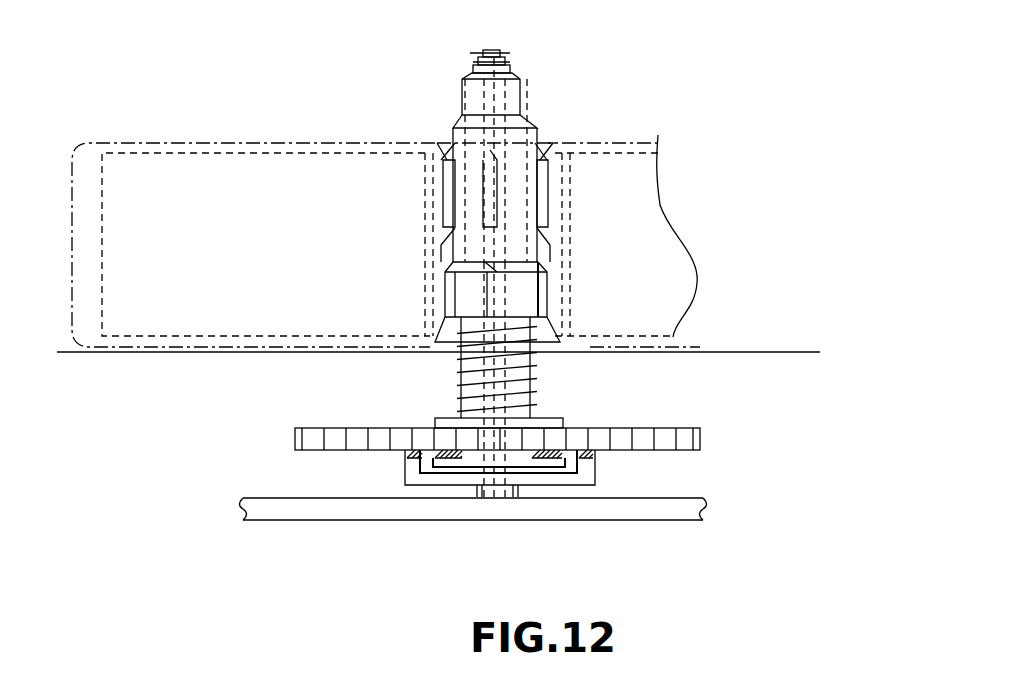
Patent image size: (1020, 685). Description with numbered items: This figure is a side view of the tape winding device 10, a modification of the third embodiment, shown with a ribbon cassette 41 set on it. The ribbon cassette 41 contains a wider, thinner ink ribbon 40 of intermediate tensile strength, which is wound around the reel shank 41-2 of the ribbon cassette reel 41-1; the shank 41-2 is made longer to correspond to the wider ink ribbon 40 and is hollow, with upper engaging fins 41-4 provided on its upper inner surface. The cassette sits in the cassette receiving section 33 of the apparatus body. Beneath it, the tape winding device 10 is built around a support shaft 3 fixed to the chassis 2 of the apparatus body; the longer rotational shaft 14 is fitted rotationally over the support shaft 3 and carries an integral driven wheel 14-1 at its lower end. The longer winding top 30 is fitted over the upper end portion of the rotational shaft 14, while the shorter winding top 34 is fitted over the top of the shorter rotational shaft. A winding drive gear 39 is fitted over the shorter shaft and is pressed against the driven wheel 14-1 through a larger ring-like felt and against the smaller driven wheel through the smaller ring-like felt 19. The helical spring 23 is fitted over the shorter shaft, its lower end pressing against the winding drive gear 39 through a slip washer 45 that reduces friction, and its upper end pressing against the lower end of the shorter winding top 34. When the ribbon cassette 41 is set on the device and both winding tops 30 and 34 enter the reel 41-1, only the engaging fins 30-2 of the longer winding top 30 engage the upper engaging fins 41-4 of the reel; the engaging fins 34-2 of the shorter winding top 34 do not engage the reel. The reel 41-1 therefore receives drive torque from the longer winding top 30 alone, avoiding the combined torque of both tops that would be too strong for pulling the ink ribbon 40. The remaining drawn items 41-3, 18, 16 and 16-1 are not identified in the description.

The tape winding device 10 is at (492, 50).
The ribbon cassette reel 41-1 is at (438, 138).
The upper engaging fins 41-4 is at (433, 165).
The engaging piece 41-3 is at (440, 302).
The ribbon cassette 41 is at (148, 143).
The ink ribbon 40 is at (277, 153).
The longer winding top 30 is at (533, 143).
The engaging fins of the longer winding top 30-2 is at (548, 185).
The reel shank 41-2 is at (557, 243).
The shorter winding top 34 is at (528, 293).
The engaging fins of the shorter winding top 34-2 is at (528, 302).
The cassette receiving section 33 is at (146, 352).
The helical spring 23 is at (462, 392).
The slip washer 45 is at (562, 418).
The winding drive gear 39 is at (703, 436).
The gasket 18 is at (405, 451).
The smaller ring-like felt 19 is at (477, 458).
The driven wheel 14-1 is at (590, 470).
The longer rotational shaft 14 is at (470, 462).
The left leg 16 is at (465, 486).
The right leg 16-1 is at (537, 478).
The support shaft 3 is at (500, 497).
The chassis 2 is at (295, 508).